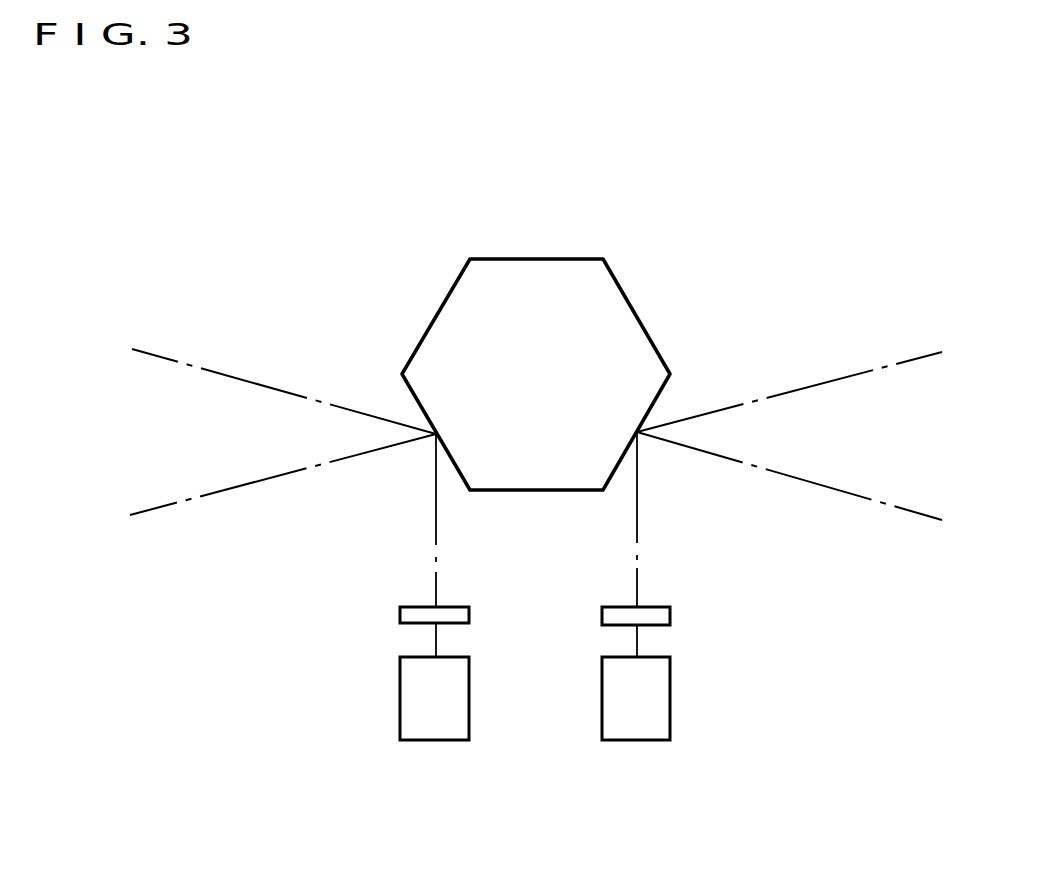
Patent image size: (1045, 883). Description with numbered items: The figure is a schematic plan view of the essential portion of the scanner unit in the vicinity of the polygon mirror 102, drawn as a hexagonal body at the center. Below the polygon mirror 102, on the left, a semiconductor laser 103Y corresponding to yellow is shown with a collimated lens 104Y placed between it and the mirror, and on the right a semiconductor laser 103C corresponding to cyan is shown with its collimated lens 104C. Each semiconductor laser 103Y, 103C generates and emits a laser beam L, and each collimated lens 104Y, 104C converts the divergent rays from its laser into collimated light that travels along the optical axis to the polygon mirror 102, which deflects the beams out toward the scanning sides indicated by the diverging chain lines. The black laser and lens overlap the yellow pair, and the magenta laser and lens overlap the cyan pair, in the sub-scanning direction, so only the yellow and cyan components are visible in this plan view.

The polygon mirror 102 is at (452, 318).
The semiconductor laser 103Y is at (413, 670).
The semiconductor laser 103C is at (655, 673).
The collimated lens 104Y is at (408, 607).
The collimated lens 104C is at (655, 607).
The laser beam L is at (436, 527).